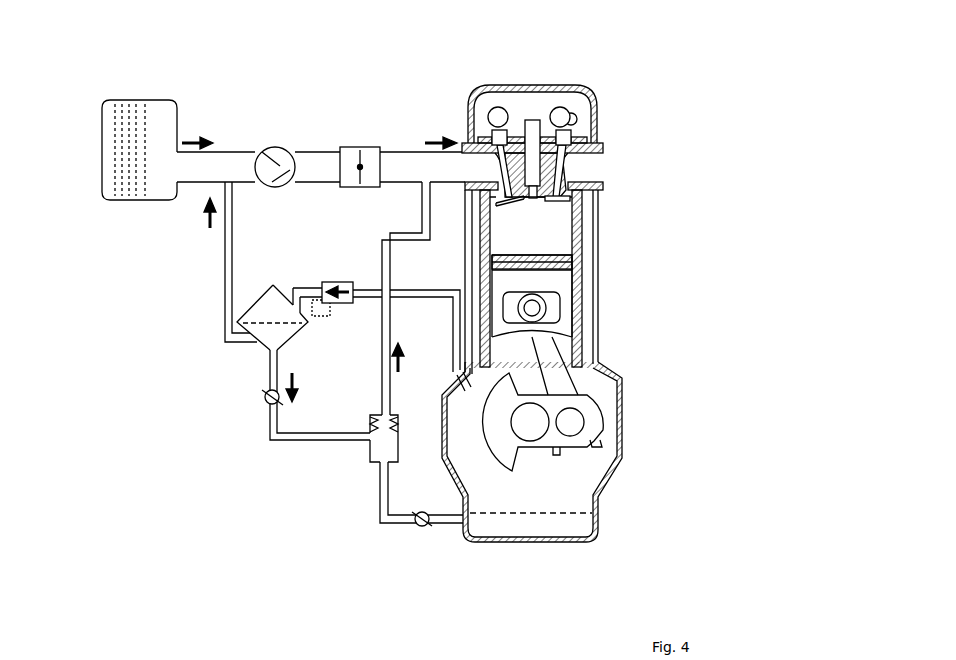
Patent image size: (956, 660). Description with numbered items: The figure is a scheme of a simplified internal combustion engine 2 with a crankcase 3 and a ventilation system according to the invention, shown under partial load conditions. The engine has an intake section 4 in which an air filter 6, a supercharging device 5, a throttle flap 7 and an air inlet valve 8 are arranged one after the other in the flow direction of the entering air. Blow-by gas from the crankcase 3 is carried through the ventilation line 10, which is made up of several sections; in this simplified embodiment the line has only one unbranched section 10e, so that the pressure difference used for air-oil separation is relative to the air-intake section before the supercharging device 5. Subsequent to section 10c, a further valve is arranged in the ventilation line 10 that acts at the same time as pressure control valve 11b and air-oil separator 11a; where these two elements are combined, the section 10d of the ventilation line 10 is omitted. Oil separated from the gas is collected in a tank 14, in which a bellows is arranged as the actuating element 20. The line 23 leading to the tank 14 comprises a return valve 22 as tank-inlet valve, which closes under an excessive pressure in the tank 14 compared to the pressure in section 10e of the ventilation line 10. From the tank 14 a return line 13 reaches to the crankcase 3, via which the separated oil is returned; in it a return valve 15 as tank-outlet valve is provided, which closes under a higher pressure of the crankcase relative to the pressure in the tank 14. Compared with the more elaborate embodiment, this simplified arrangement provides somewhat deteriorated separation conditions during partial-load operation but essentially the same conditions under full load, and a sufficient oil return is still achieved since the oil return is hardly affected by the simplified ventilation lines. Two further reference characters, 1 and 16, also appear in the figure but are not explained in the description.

The internal combustion engine 1 is at (174, 386).
The internal combustion engine 2 is at (596, 272).
The crankcase 3 is at (607, 380).
The intake section 4 is at (498, 78).
The supercharging device 5 is at (280, 158).
The air filter 6 is at (140, 190).
The throttle flap 7 is at (357, 155).
The air inlet valve 8 is at (488, 142).
The ventilation line 10 is at (188, 300).
The section of the ventilation line 10c is at (455, 339).
The section of the ventilation line 10d is at (310, 297).
The section of the ventilation line 10e is at (225, 241).
The air-oil separator 11a is at (266, 346).
The pressure control valve 11b is at (336, 303).
The return line 13 is at (453, 526).
The tank 14 is at (388, 452).
The return valve 15 is at (418, 526).
The connecting passage 16 is at (388, 272).
The actuating element 20 is at (385, 426).
The return valve 22 is at (266, 405).
The line 23 is at (279, 368).